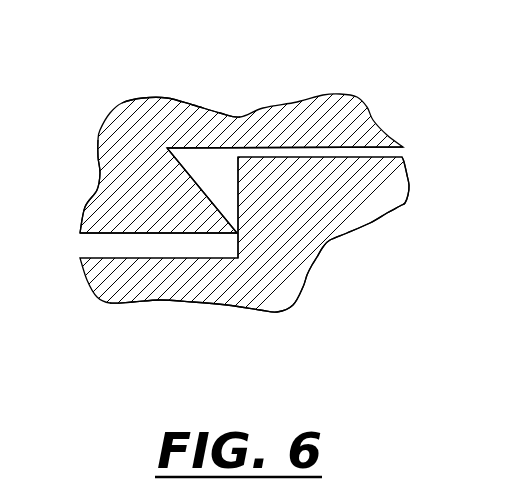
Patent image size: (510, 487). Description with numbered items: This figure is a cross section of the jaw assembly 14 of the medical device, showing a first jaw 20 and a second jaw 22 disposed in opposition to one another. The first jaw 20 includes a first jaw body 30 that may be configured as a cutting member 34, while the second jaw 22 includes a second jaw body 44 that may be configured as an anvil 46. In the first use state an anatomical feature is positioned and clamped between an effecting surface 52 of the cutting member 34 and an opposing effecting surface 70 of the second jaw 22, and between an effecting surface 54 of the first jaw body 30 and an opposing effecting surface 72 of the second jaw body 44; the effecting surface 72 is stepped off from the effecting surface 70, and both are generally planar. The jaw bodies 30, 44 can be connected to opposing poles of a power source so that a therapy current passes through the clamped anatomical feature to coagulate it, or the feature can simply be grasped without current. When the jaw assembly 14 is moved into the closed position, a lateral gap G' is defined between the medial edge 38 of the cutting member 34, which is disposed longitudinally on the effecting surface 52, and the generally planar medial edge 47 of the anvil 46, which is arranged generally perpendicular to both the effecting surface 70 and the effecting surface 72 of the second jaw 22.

The jaw assembly 14 is at (322, 48).
The first jaw 20 is at (121, 93).
The second jaw 22 is at (142, 309).
The first jaw body 30 is at (182, 130).
The cutting member 34 is at (127, 212).
The medial edge 38 is at (213, 203).
The second jaw body 44 is at (270, 250).
The anvil 46 is at (270, 250).
The medial edge 47 is at (240, 207).
The effecting surface 52 is at (105, 234).
The effecting surface 54 is at (243, 147).
The effecting surface 70 is at (173, 258).
The effecting surface 72 is at (358, 157).
The gap G' is at (267, 287).